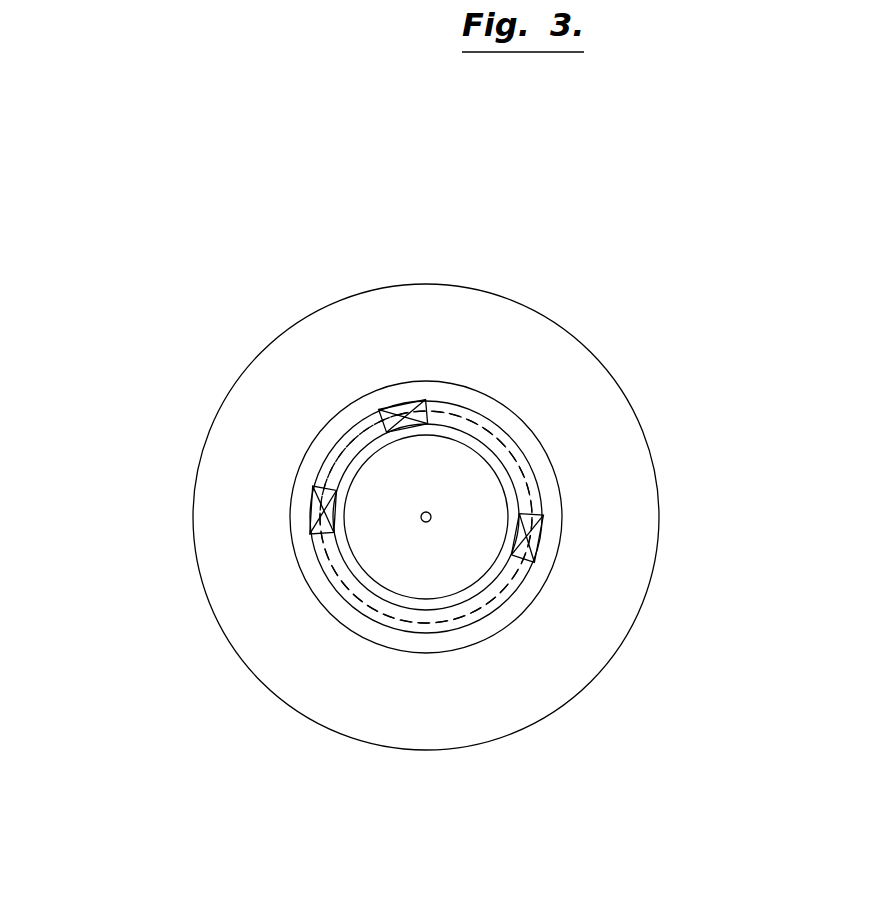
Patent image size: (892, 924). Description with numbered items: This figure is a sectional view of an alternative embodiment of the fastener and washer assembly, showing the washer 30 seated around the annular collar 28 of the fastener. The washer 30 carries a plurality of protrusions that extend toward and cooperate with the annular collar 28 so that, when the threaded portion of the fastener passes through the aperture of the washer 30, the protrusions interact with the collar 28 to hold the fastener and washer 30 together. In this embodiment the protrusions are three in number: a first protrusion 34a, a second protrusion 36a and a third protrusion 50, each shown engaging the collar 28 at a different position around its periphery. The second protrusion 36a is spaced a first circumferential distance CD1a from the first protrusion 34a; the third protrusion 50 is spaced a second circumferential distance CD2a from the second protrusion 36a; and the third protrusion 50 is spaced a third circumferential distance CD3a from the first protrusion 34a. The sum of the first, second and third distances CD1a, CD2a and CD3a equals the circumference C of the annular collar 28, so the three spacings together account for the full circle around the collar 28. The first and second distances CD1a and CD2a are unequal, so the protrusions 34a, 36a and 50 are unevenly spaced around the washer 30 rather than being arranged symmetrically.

The washer 30 is at (508, 377).
The annular collar 28 is at (428, 600).
The circumference C is at (510, 452).
The first circumferential distance CD1a is at (460, 620).
The second circumferential distance CD2a is at (472, 423).
The third circumferential distance CD3a is at (340, 453).
The third protrusion 50 is at (383, 423).
The first protrusion 34a is at (313, 522).
The second protrusion 36a is at (520, 555).